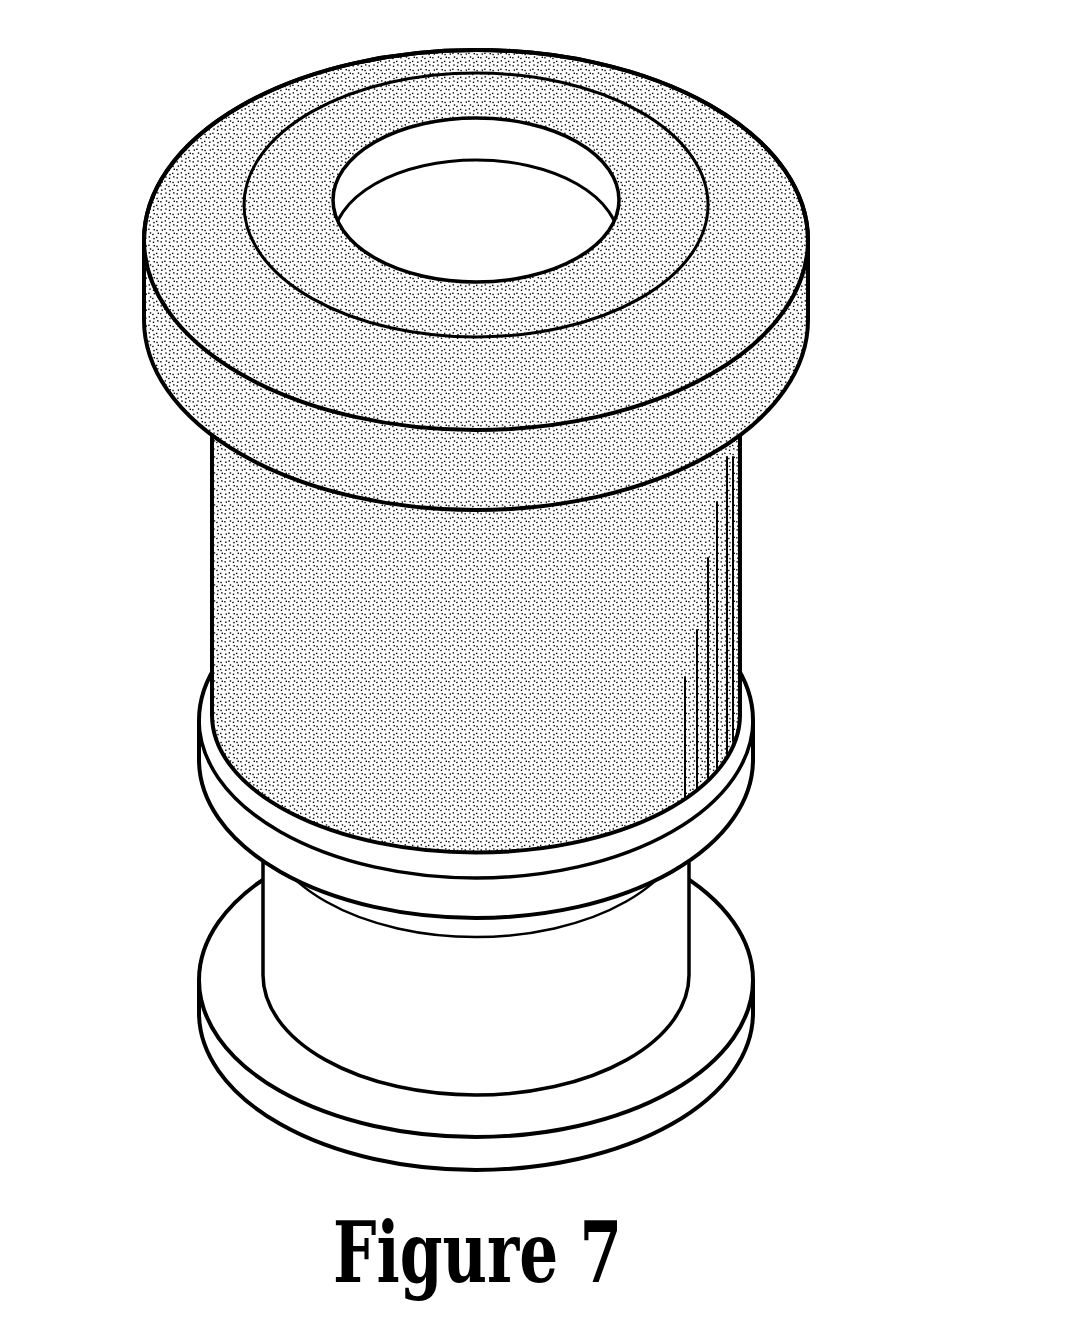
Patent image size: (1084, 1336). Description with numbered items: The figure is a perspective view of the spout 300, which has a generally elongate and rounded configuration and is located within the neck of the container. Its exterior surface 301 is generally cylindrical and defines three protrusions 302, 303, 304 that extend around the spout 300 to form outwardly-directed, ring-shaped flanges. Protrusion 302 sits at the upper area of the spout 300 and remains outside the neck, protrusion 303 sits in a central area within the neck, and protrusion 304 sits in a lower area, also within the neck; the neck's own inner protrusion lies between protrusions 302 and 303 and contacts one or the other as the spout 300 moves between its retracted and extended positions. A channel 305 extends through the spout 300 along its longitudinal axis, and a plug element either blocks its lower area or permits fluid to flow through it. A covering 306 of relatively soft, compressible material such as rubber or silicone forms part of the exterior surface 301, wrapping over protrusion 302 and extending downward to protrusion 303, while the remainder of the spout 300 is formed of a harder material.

The spout 300 is at (180, 145).
The exterior surface 301 is at (270, 570).
The protrusion 302 is at (810, 272).
The protrusion 303 is at (754, 757).
The protrusion 304 is at (199, 1008).
The channel 305 is at (486, 197).
The covering 306 is at (740, 567).